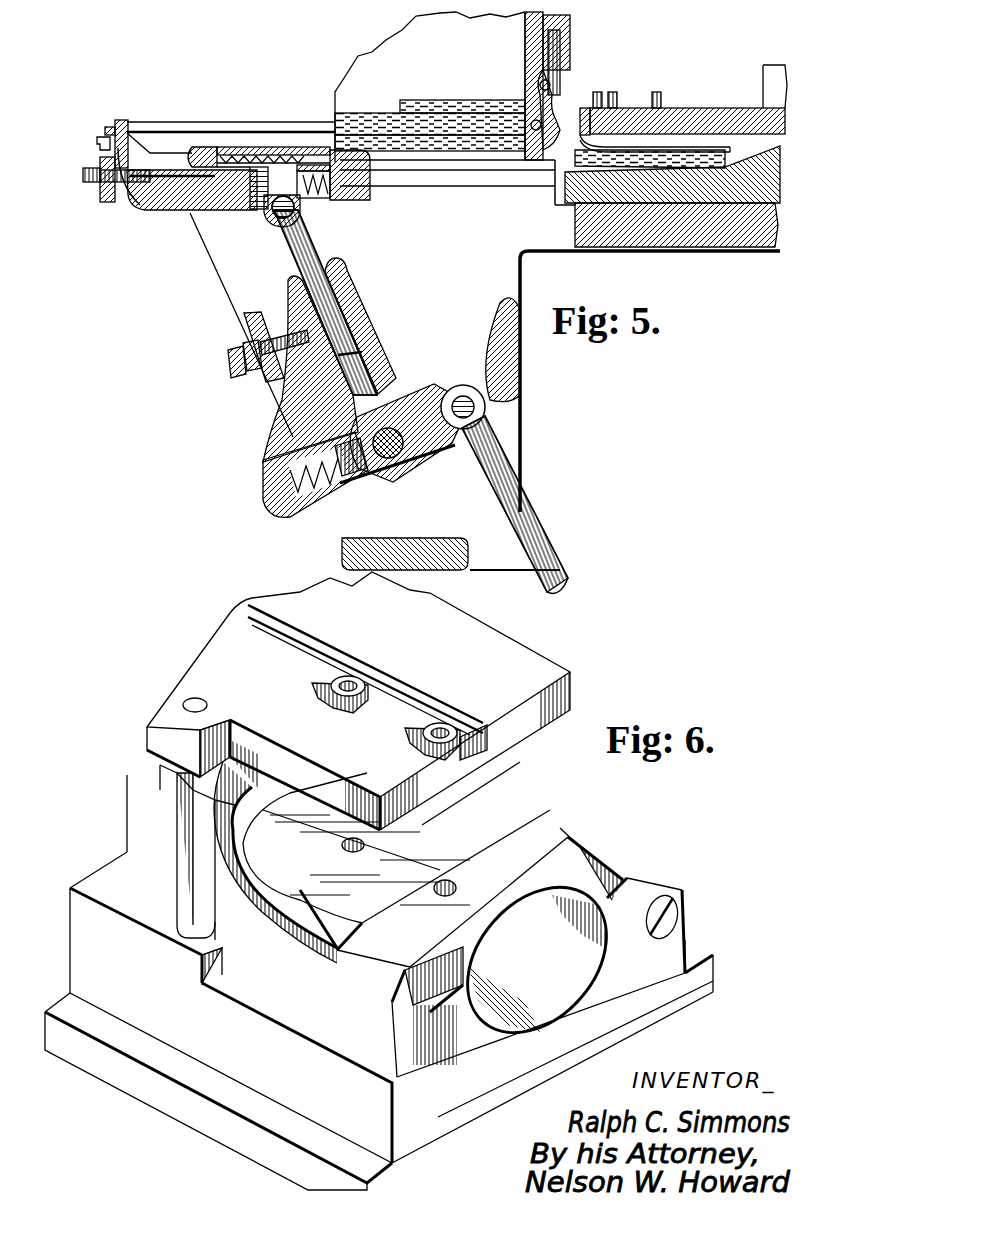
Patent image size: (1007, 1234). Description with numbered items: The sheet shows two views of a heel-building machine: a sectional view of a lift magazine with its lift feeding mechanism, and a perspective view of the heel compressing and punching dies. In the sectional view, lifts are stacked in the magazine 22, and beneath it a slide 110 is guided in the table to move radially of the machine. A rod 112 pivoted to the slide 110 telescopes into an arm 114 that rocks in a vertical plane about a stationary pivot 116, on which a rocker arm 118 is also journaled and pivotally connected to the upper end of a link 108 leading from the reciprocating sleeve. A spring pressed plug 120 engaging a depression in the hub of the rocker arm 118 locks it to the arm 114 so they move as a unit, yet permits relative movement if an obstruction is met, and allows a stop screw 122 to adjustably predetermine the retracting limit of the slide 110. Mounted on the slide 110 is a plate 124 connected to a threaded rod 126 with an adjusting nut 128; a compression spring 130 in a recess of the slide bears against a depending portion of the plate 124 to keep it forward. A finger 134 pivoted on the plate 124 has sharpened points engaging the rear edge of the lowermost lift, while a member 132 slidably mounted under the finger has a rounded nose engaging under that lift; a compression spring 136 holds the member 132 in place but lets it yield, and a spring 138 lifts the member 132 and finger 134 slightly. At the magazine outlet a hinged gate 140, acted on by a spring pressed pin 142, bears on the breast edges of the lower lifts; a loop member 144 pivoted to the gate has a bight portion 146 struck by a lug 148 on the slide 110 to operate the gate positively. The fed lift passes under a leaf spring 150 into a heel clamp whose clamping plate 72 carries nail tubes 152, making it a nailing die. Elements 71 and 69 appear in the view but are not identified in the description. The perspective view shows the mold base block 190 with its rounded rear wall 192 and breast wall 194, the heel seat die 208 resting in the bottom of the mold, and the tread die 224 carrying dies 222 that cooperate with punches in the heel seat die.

In FIG. 5, the magazine 22 is at (350, 82).
In FIG. 5, the spring pressed pin 142 is at (562, 46).
In FIG. 5, the hinged gate 140 is at (545, 140).
In FIG. 5, the bar 71 is at (763, 66).
In FIG. 5, the clamping plate 72 is at (678, 116).
In FIG. 5, the nail tubes 152 is at (613, 94).
In FIG. 5, the leaf spring 150 is at (703, 140).
In FIG. 5, the friction layer 69 is at (716, 148).
In FIG. 5, the loop member 144 is at (152, 128).
In FIG. 5, the lug 148 is at (120, 125).
In FIG. 5, the bight portion 146 is at (100, 128).
In FIG. 5, the finger 134 is at (297, 147).
In FIG. 5, the compression spring 136 is at (241, 147).
In FIG. 5, the slide 110 is at (190, 212).
In FIG. 5, the threaded rod 126 is at (125, 205).
In FIG. 5, the spring 138 is at (252, 212).
In FIG. 5, the adjusting nut 128 is at (98, 186).
In FIG. 5, the compression spring 130 is at (312, 199).
In FIG. 5, the member 132 is at (366, 172).
In FIG. 5, the plate 124 is at (280, 220).
In FIG. 5, the rod 112 is at (330, 243).
In FIG. 5, the arm 114 is at (373, 335).
In FIG. 5, the stop screw 122 is at (278, 325).
In FIG. 5, the stationary pivot 116 is at (400, 468).
In FIG. 5, the rocker arm 118 is at (452, 450).
In FIG. 5, the spring pressed plug 120 is at (340, 470).
In FIG. 5, the link 108 is at (546, 545).
In FIG. 6, the mold base block 190 is at (173, 1025).
In FIG. 6, the breast wall 194 is at (605, 852).
In FIG. 6, the heel seat die 208 is at (478, 813).
In FIG. 6, the rounded rear wall 192 is at (210, 827).
In FIG. 6, the tread die 224 is at (230, 658).
In FIG. 6, the dies 222 is at (437, 725).